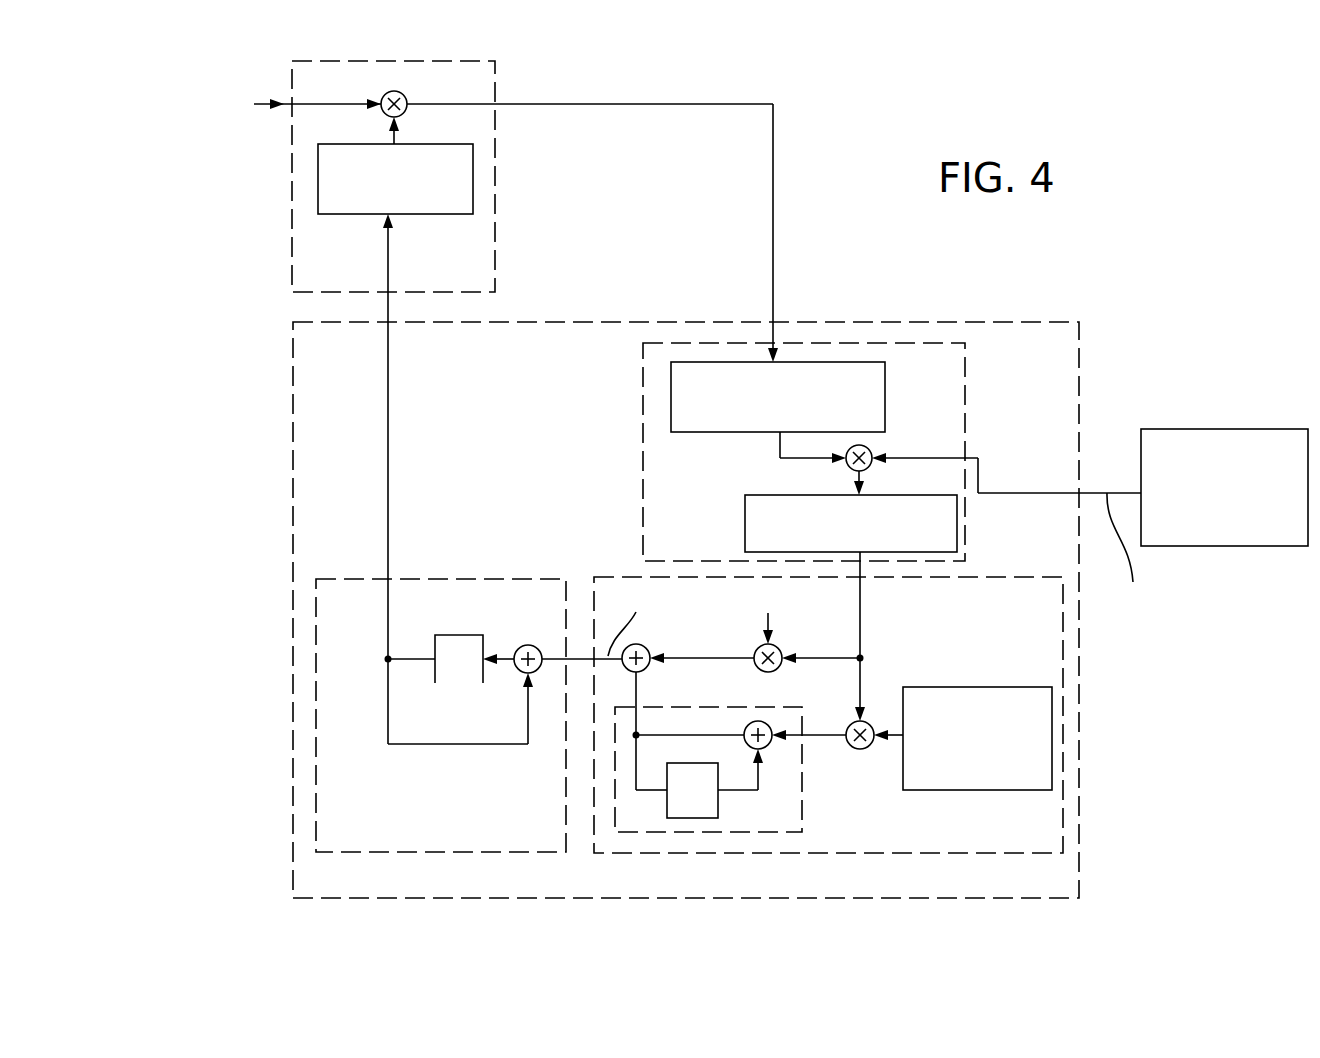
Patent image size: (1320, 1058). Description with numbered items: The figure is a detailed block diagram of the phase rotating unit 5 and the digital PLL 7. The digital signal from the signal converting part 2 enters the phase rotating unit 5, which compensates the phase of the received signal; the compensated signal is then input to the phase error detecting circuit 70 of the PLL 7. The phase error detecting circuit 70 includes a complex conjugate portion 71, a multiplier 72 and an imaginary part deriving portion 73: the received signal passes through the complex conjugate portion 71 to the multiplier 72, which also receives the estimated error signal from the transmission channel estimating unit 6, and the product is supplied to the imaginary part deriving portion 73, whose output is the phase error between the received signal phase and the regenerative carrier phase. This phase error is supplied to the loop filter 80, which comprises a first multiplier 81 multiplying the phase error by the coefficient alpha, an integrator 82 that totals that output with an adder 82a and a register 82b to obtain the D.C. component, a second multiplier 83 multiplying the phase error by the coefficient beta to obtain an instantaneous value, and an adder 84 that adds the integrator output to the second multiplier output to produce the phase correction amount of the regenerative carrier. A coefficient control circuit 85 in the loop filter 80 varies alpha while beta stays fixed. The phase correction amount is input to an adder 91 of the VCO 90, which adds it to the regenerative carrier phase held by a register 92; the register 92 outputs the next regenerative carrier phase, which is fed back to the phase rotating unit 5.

The signal converting part 2 is at (260, 78).
The phase rotating unit 5 is at (495, 250).
The transmission channel estimating unit 6 is at (1181, 429).
The PLL 7 is at (928, 322).
The phase error detecting circuit 70 is at (965, 350).
The complex conjugate portion 71 is at (885, 386).
The multiplier 72 is at (870, 449).
The imaginary part deriving portion 73 is at (745, 544).
The loop filter 80 is at (627, 855).
The first multiplier 81 is at (853, 748).
The integrator 82 is at (803, 816).
The adder 82a is at (771, 722).
The register 82b is at (718, 800).
The second multiplier 83 is at (780, 648).
The adder 84 is at (648, 648).
The coefficient control circuit 85 is at (977, 790).
The VCO 90 is at (454, 578).
The adder 91 is at (528, 645).
The register 92 is at (458, 635).